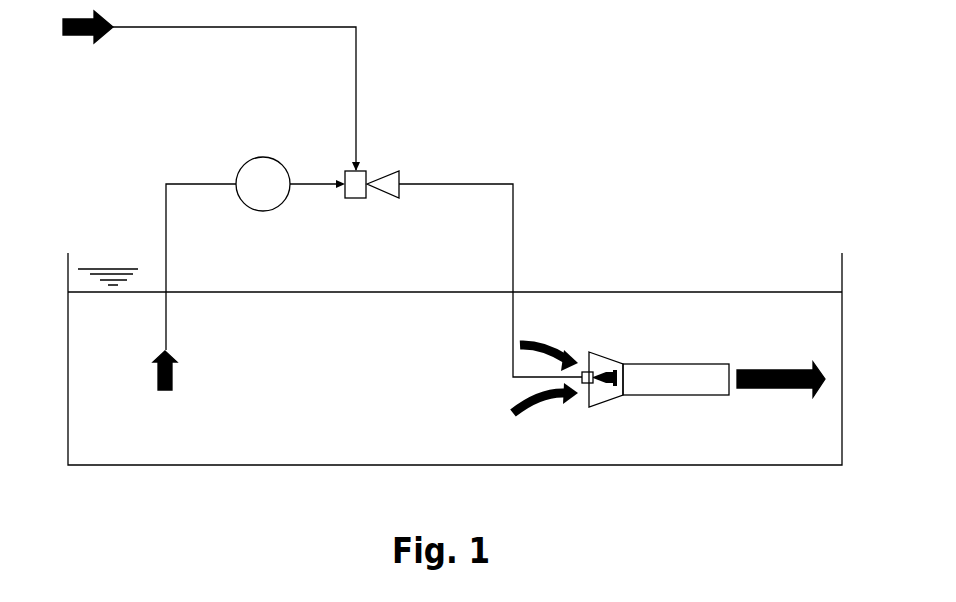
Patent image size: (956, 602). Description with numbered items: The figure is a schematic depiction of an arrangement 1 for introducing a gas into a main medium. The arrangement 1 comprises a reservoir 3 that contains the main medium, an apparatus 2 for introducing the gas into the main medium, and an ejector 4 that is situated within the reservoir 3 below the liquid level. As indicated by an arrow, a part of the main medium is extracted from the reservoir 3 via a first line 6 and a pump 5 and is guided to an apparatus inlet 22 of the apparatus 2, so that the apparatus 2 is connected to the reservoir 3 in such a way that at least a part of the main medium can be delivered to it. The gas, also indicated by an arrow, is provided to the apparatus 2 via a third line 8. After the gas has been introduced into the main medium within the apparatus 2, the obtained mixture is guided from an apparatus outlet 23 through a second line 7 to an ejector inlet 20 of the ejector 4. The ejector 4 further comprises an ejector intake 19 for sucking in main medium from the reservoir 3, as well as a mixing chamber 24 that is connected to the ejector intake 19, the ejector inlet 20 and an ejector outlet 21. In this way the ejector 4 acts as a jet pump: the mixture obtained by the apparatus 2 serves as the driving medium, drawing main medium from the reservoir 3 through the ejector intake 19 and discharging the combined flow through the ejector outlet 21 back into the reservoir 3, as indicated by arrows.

The arrangement 1 is at (764, 65).
The apparatus 2 is at (367, 177).
The reservoir 3 is at (327, 302).
The ejector 4 is at (669, 374).
The pump 5 is at (263, 157).
The first line 6 is at (166, 235).
The second line 7 is at (513, 222).
The third line 8 is at (208, 27).
The ejector intake 19 is at (589, 407).
The ejector inlet 20 is at (593, 352).
The ejector outlet 21 is at (730, 367).
The apparatus inlet 22 is at (343, 186).
The apparatus outlet 23 is at (367, 184).
The mixing chamber 24 is at (657, 375).